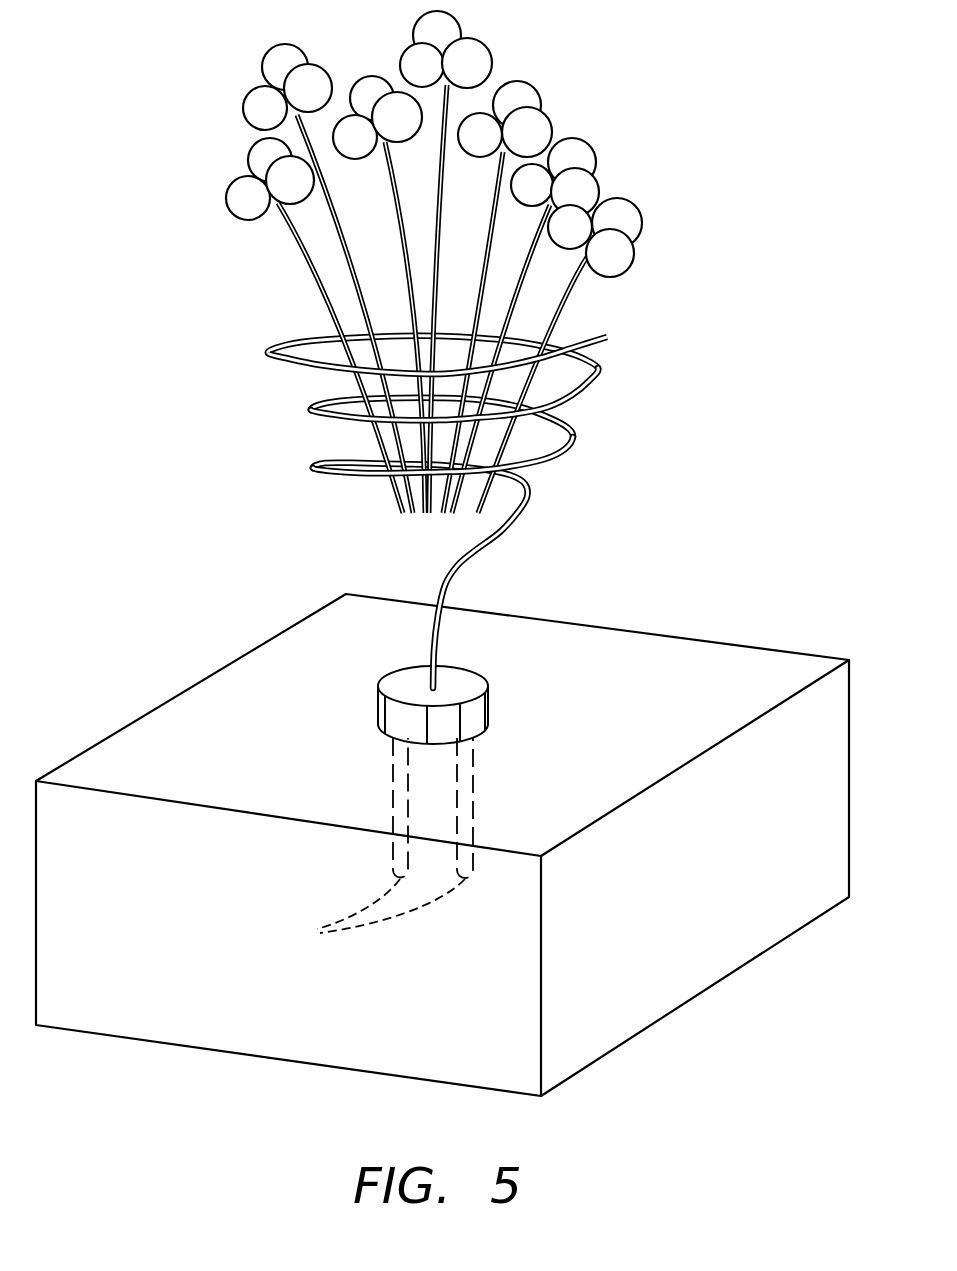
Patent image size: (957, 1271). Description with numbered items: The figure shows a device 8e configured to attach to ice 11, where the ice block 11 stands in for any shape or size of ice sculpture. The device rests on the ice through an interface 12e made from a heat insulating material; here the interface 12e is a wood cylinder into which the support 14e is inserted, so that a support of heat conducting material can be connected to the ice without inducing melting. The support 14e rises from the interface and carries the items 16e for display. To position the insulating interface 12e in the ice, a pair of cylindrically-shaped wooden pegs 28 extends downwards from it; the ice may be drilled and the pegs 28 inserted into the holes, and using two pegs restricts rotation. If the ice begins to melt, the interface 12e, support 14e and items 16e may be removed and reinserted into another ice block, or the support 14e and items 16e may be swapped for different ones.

The device 8e is at (349, 349).
The ice 11 is at (261, 645).
The interface 12e is at (490, 703).
The support 14e is at (433, 512).
The items 16e is at (285, 227).
The pegs 28 is at (374, 842).